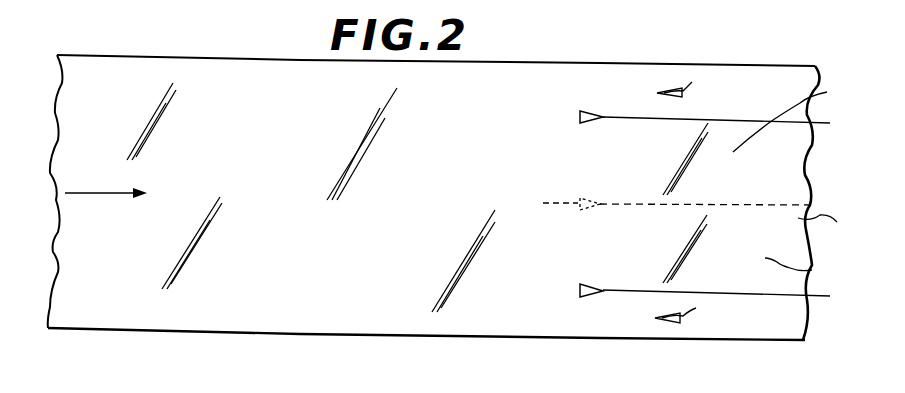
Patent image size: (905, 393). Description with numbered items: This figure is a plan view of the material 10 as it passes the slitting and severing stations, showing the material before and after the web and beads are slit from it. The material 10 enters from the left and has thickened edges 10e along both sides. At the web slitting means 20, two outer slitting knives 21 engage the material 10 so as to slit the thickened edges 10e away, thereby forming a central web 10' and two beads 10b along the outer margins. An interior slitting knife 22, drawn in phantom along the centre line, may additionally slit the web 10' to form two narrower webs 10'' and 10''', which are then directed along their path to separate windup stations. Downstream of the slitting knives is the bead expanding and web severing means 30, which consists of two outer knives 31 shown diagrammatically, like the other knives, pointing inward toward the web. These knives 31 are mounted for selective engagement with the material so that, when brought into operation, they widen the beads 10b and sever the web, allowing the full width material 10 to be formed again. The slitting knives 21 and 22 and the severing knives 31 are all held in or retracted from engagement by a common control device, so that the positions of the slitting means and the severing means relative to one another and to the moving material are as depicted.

The material 10 is at (431, 213).
The thickened edges 10e is at (98, 67).
The beads 10b is at (622, 86).
The web 10' is at (831, 222).
The narrow width web 10'' is at (808, 273).
The narrow width web 10''' is at (799, 116).
The web slitting means 20 is at (586, 307).
The outer slitting knives 21 is at (580, 115).
The interior slitting knife 22 is at (665, 206).
The bead expanding and web severing means 30 is at (667, 328).
The outer knives 31 is at (688, 199).